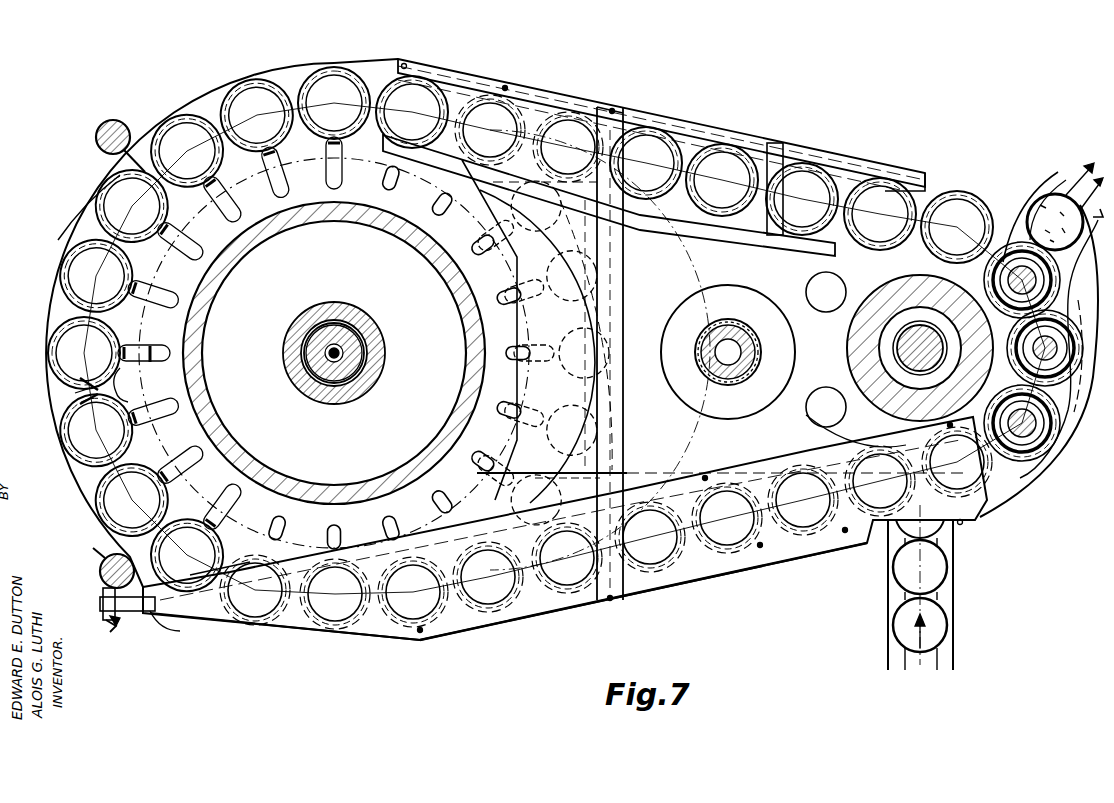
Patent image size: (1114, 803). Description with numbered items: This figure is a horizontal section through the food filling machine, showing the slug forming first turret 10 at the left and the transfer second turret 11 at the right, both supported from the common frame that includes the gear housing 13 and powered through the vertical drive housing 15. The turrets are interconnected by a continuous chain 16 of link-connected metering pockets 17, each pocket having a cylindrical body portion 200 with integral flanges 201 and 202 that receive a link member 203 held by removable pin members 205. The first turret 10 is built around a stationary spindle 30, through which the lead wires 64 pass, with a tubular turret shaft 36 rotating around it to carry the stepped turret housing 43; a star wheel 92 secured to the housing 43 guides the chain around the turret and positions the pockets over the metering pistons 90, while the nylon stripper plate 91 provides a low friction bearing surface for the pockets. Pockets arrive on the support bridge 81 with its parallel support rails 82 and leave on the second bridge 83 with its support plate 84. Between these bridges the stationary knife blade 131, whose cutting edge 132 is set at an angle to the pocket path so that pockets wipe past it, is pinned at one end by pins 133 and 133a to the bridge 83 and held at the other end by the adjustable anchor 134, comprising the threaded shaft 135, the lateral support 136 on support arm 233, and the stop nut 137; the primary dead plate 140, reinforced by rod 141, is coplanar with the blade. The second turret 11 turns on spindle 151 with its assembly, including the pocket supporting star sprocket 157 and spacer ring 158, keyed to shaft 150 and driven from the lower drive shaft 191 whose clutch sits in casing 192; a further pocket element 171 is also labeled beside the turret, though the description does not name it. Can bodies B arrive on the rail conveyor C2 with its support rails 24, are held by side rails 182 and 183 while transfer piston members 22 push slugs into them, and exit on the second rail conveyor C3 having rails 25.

The first turret 10 is at (60, 140).
The second turret 11 is at (992, 178).
The gear housing 13 is at (712, 450).
The vertical drive housing 15 is at (728, 340).
The continuous chain 16 is at (338, 70).
The metering pockets 17 is at (262, 88).
The transfer piston members 22 is at (1060, 282).
The support rails 24 is at (916, 670).
The rails 25 is at (1087, 183).
The stationary spindle 30 is at (356, 331).
The tubular turret shaft 36 is at (375, 338).
The stepped turret housing 43 is at (334, 353).
The lead wires 64 is at (338, 364).
The support bridge 81 is at (701, 122).
The support rails 82 is at (700, 142).
The second bridge 83 is at (690, 594).
The support plate 84 is at (792, 458).
The metering piston 90 is at (558, 272).
The nylon stripper plate 91 is at (50, 312).
The star wheel 92 is at (172, 331).
The stationary knife blade 131 is at (160, 605).
The cutting edge 132 is at (238, 550).
The pin 133 is at (420, 644).
The pin 133a is at (576, 487).
The adjustable anchor 134 is at (124, 614).
The threaded shaft 135 is at (101, 614).
The lateral support 136 is at (170, 632).
The stop nut 137 is at (110, 626).
The primary dead plate 140 is at (612, 398).
The rod 141 is at (612, 306).
The shaft 150 is at (852, 378).
The spindle 151 is at (905, 343).
The pocket supporting star sprocket 157 is at (845, 328).
The spacer ring 158 is at (888, 416).
The carrier 171 is at (1030, 330).
The side rail 182 is at (1030, 208).
The side rail 183 is at (1062, 436).
The lower drive shaft 191 is at (756, 334).
The casing 192 is at (699, 298).
The cylindrical body portion 200 is at (124, 385).
The flange 201 is at (50, 346).
The flange 202 is at (140, 365).
The link member 203 is at (74, 228).
The pin members 205 is at (76, 382).
The support arm 233 is at (110, 566).
The can bodies B is at (946, 576).
The rail conveyor C2 is at (882, 623).
The second rail conveyor C3 is at (1048, 180).